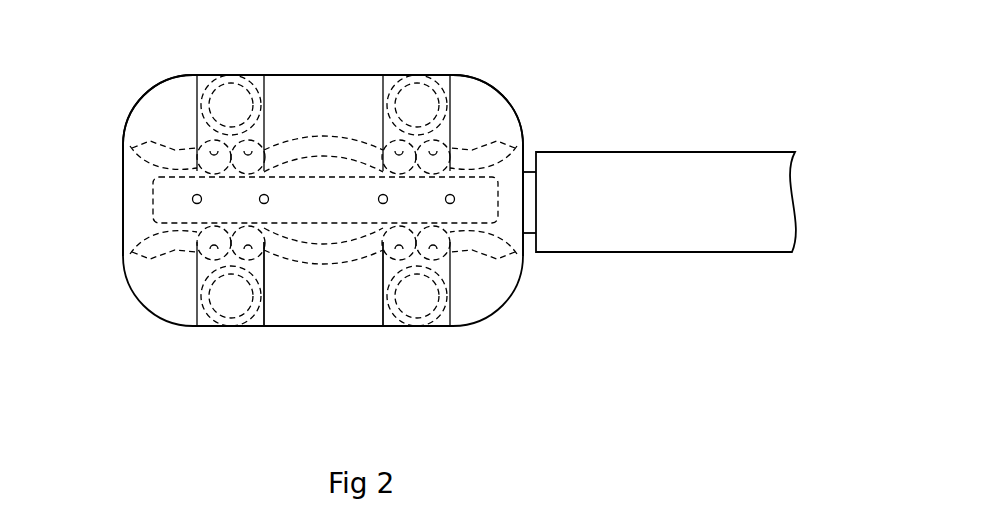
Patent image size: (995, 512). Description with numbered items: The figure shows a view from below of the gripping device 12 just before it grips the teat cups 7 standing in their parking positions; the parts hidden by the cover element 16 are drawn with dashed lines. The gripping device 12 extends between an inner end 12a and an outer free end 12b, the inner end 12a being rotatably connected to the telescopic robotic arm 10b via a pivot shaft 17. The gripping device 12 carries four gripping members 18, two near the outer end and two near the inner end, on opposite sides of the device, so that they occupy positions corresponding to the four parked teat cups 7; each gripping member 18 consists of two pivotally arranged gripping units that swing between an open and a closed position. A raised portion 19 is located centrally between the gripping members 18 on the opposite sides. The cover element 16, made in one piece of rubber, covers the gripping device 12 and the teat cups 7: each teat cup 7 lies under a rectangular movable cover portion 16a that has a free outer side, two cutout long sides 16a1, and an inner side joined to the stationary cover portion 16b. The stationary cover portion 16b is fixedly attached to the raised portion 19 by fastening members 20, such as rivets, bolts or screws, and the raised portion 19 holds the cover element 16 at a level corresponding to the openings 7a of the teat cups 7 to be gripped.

The teat cup 7 is at (198, 98).
The opening of the teat cup 7a is at (227, 102).
The telescopic robotic arm 10b is at (638, 180).
The gripping device 12 is at (512, 222).
The inner end 12a is at (524, 192).
The outer free end 12b is at (123, 202).
The cover element 16 is at (168, 283).
The movable cover portion 16a is at (203, 100).
The cutout long side 16a1 is at (263, 283).
The stationary cover portion 16b is at (160, 113).
The pivot shaft 17 is at (530, 210).
The gripping member 18 is at (370, 158).
The raised portion 19 is at (175, 193).
The fastening member 20 is at (193, 202).